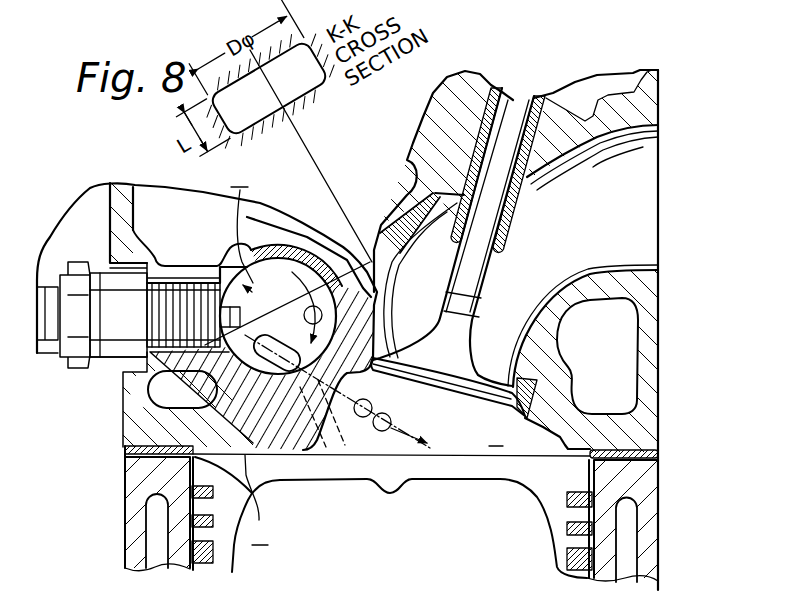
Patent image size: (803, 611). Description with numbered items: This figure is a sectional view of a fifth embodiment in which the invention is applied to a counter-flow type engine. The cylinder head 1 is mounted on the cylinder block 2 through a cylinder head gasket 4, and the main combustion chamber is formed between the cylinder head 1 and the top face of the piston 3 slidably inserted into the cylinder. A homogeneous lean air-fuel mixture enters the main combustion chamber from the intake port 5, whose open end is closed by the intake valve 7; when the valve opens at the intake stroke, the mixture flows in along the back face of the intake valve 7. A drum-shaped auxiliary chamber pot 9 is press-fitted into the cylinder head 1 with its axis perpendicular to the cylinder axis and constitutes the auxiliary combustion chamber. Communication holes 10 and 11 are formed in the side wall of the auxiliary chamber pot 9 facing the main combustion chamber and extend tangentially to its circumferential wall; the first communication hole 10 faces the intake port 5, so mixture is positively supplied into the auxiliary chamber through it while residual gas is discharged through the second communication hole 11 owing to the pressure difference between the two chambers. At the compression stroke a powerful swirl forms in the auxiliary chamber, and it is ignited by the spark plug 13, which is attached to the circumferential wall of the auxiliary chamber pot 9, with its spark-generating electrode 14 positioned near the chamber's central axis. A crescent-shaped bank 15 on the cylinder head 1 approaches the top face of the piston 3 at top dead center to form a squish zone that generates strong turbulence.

The cylinder head 1 is at (652, 378).
The cylinder block 2 is at (648, 493).
The piston 3 is at (547, 492).
The cylinder head gasket 4 is at (660, 453).
The intake port 5 is at (612, 210).
The intake valve 7 is at (488, 396).
The auxiliary chamber pot 9 is at (287, 450).
The first communication hole 10 is at (320, 440).
The second communication hole 11 is at (313, 420).
The spark plug 13 is at (105, 288).
The spark-generating electrode 14 is at (248, 270).
The crescent-shaped bank 15 is at (180, 462).